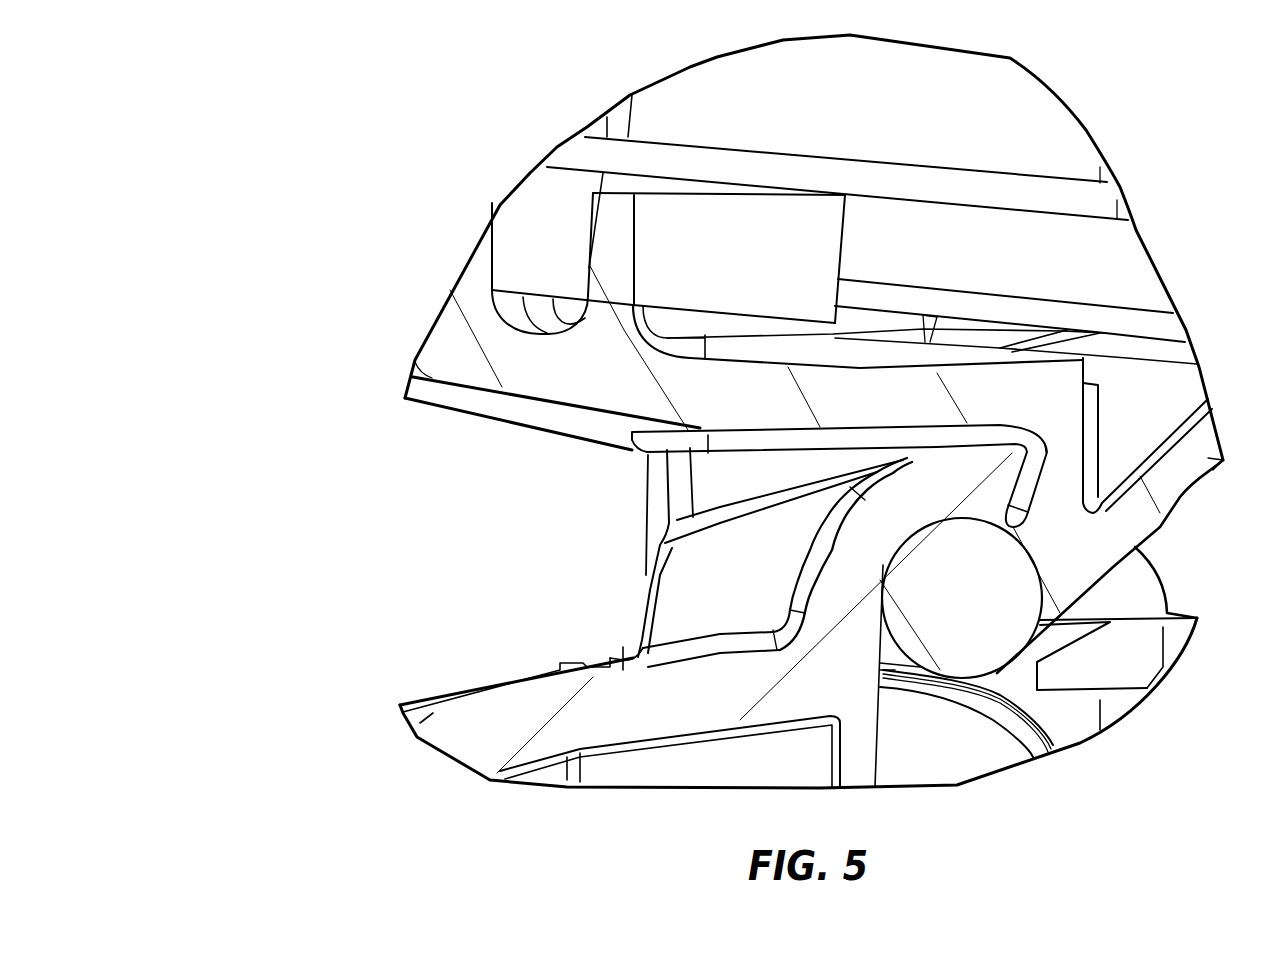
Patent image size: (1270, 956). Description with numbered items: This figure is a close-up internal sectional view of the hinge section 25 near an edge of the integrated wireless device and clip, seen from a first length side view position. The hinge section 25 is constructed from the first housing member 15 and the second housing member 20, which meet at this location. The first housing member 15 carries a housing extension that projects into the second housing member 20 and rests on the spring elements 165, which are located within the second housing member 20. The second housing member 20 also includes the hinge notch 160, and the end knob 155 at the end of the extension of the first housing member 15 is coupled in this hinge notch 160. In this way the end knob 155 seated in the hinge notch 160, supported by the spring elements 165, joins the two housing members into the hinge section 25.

The first housing member 15 is at (317, 157).
The second housing member 20 is at (352, 742).
The hinge section 25 is at (464, 517).
The end knob 155 is at (1017, 600).
The hinge notch 160 is at (825, 583).
The spring elements 165 is at (1000, 715).